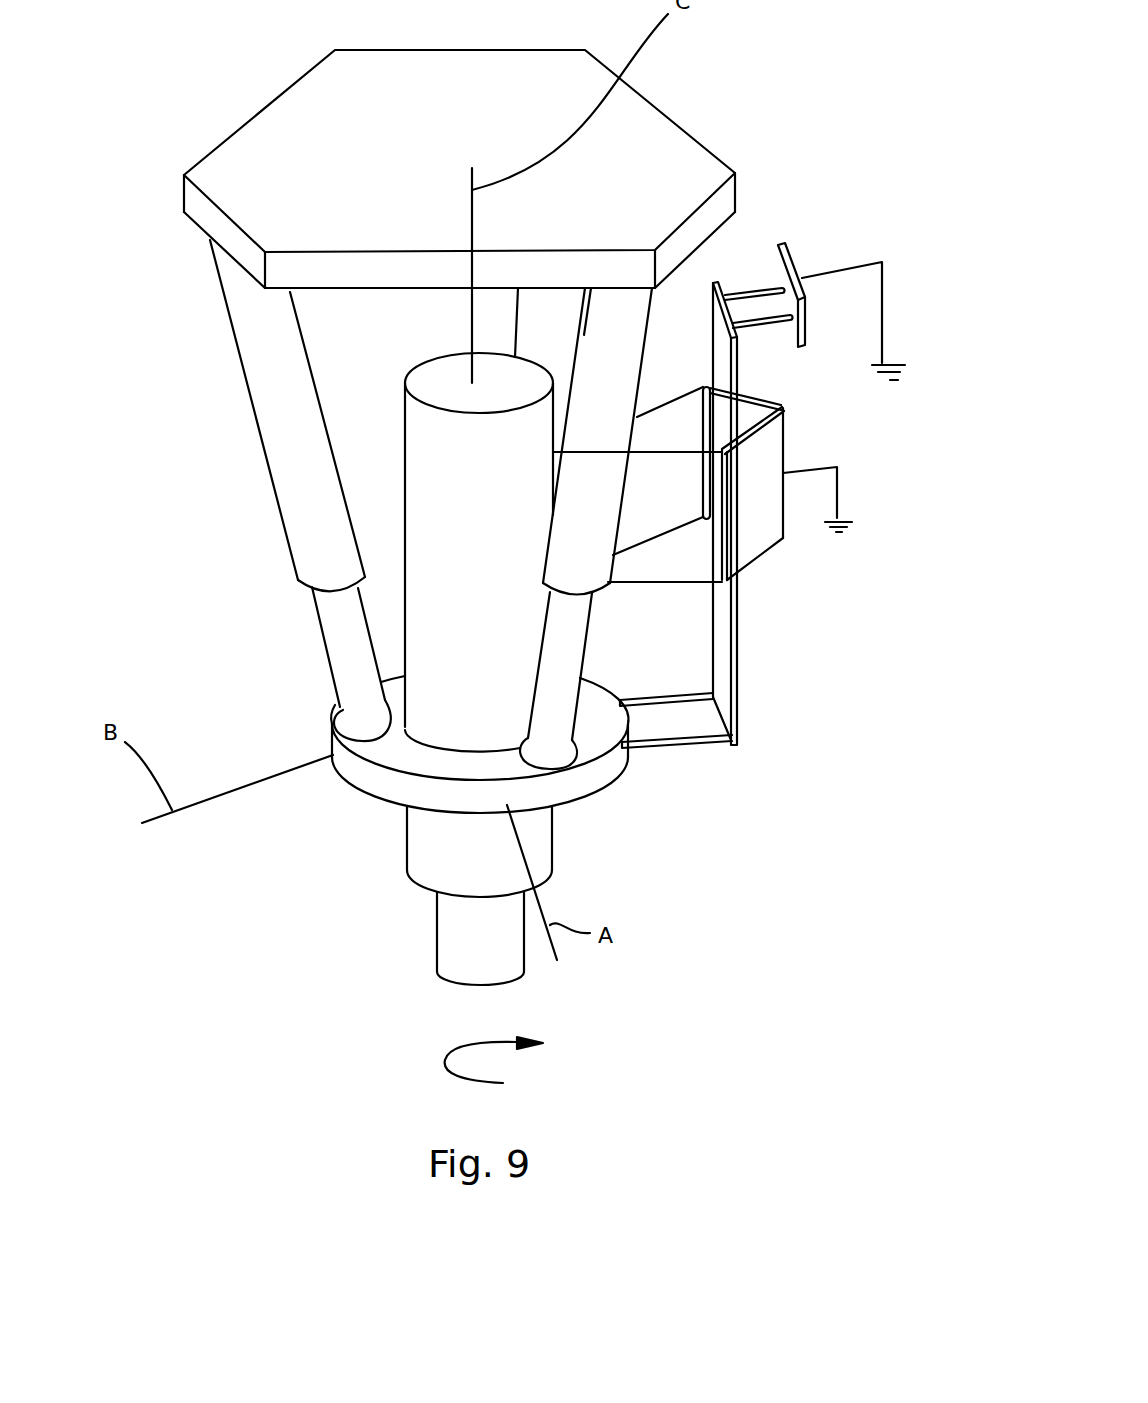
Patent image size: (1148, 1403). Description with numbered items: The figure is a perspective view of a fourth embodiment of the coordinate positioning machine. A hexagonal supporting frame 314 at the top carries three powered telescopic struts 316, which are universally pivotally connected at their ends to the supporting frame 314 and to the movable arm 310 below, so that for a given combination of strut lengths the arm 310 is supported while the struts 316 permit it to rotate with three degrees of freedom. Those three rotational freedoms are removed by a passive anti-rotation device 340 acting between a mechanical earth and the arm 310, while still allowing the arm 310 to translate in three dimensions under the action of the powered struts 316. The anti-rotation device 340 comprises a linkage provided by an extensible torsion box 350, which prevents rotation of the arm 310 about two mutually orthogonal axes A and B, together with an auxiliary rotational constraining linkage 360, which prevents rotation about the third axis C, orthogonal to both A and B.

The arm 310 is at (420, 840).
The supporting frame 314 is at (625, 117).
The powered telescopic struts 316 is at (268, 378).
The passive anti-rotation device 340 is at (767, 770).
The extensible torsion box 350 is at (826, 418).
The auxiliary rotational constraining linkage 360 is at (768, 238).